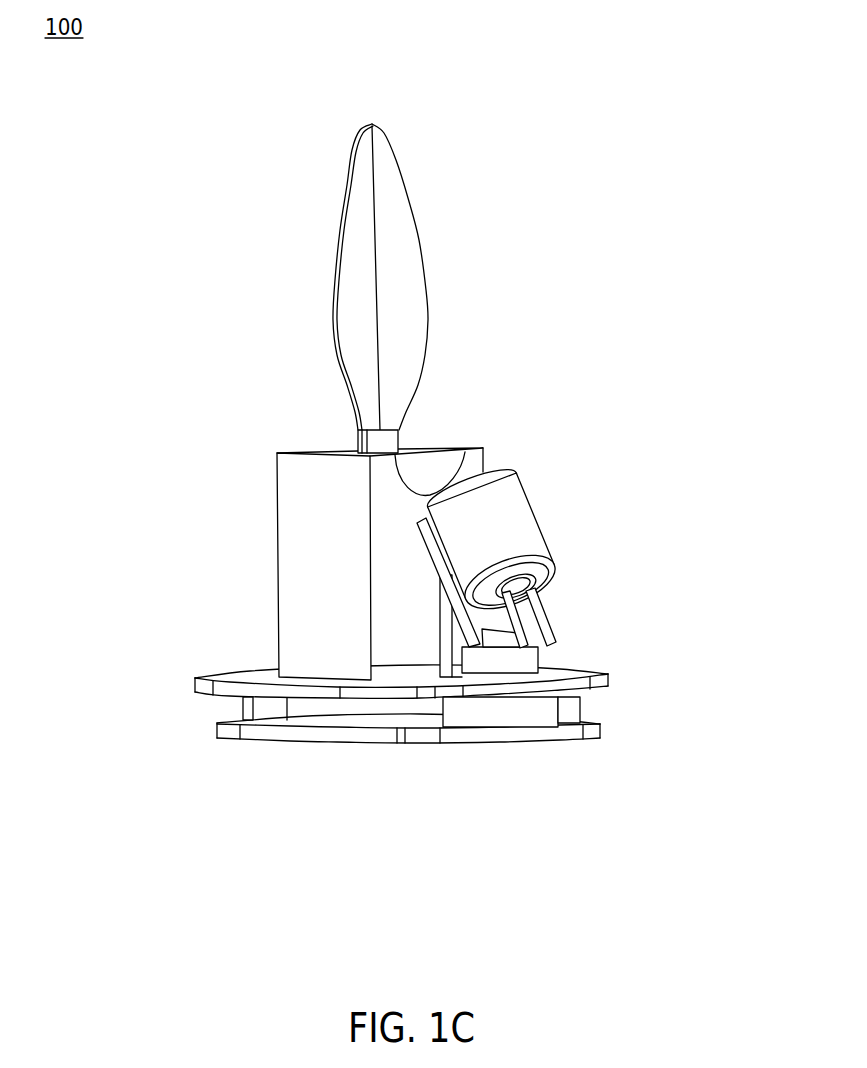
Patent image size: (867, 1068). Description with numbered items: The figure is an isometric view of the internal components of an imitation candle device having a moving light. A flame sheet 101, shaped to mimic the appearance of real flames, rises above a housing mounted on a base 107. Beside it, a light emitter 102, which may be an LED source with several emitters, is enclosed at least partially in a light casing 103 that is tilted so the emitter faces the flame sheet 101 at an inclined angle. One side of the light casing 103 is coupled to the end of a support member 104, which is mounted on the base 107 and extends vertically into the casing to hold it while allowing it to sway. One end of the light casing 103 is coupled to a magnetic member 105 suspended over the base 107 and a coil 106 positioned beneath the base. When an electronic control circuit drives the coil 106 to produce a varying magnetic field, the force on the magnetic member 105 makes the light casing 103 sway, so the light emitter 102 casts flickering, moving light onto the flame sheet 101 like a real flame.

The flame sheet 101 is at (398, 372).
The light emitter 102 is at (540, 603).
The light casing 103 is at (500, 535).
The support member 104 is at (430, 627).
The magnetic member 105 is at (511, 660).
The coil 106 is at (513, 705).
The base 107 is at (248, 672).